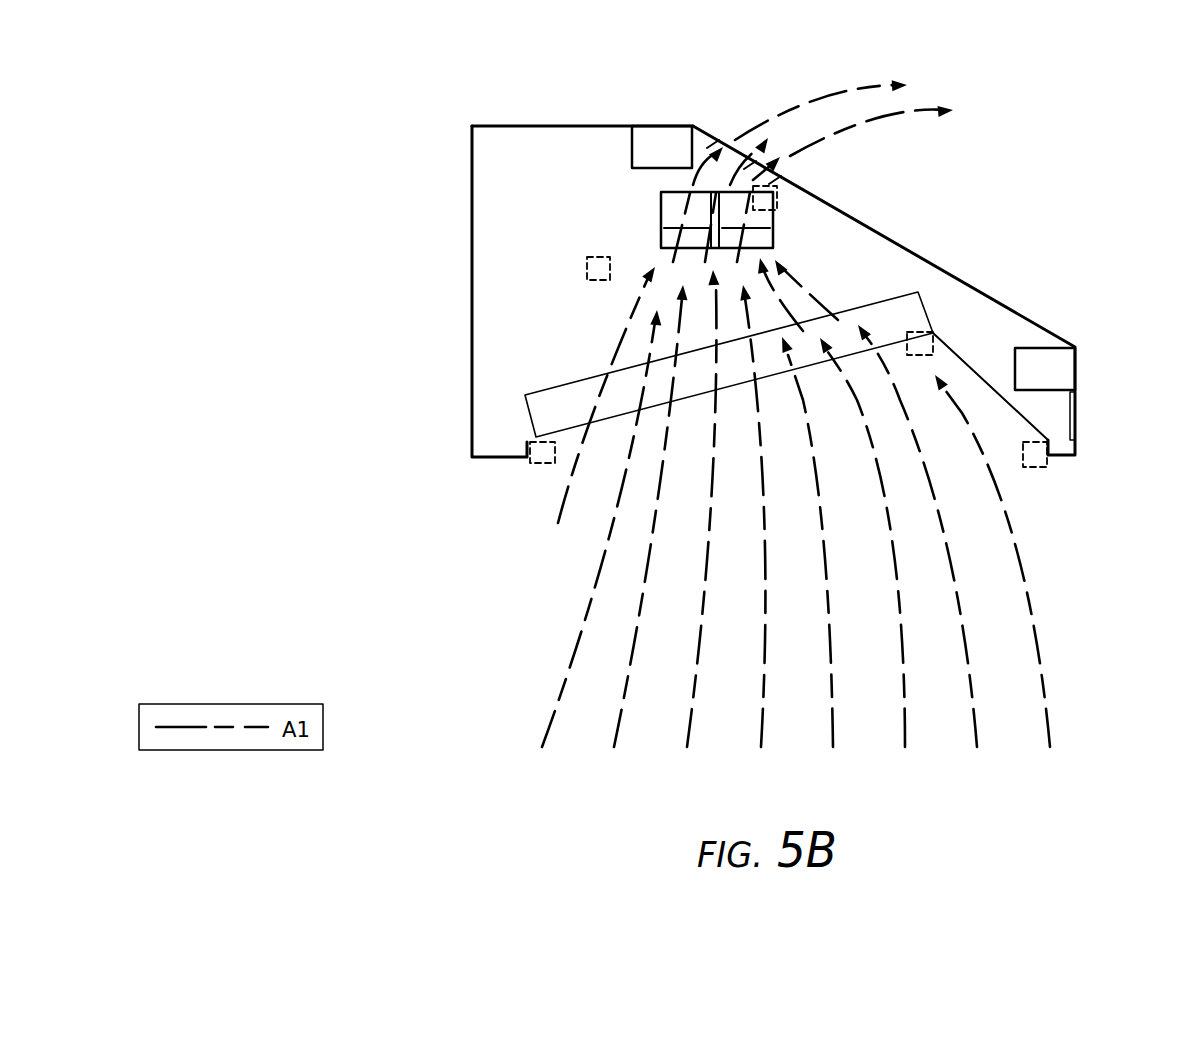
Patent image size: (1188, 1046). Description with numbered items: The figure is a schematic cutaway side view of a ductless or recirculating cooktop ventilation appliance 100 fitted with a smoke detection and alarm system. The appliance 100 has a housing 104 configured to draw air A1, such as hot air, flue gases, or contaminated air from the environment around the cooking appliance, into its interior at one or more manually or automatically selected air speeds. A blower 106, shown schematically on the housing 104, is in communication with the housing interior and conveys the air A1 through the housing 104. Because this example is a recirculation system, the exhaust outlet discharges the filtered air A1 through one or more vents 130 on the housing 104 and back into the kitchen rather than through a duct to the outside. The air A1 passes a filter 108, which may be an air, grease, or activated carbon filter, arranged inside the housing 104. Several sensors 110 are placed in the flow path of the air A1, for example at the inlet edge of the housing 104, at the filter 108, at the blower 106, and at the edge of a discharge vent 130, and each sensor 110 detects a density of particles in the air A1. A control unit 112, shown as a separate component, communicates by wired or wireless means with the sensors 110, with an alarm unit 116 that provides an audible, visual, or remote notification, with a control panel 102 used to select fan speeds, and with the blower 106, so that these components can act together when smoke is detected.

The ventilation appliance 100 is at (1165, 548).
The control panel 102 is at (1077, 420).
The housing 104 is at (568, 123).
The blower 106 is at (660, 203).
The filter 108 is at (900, 296).
The sensor 110 is at (587, 262).
The control unit 112 is at (1060, 347).
The alarm unit 116 is at (663, 138).
The vent 130 is at (724, 140).
The air A1 is at (575, 633).